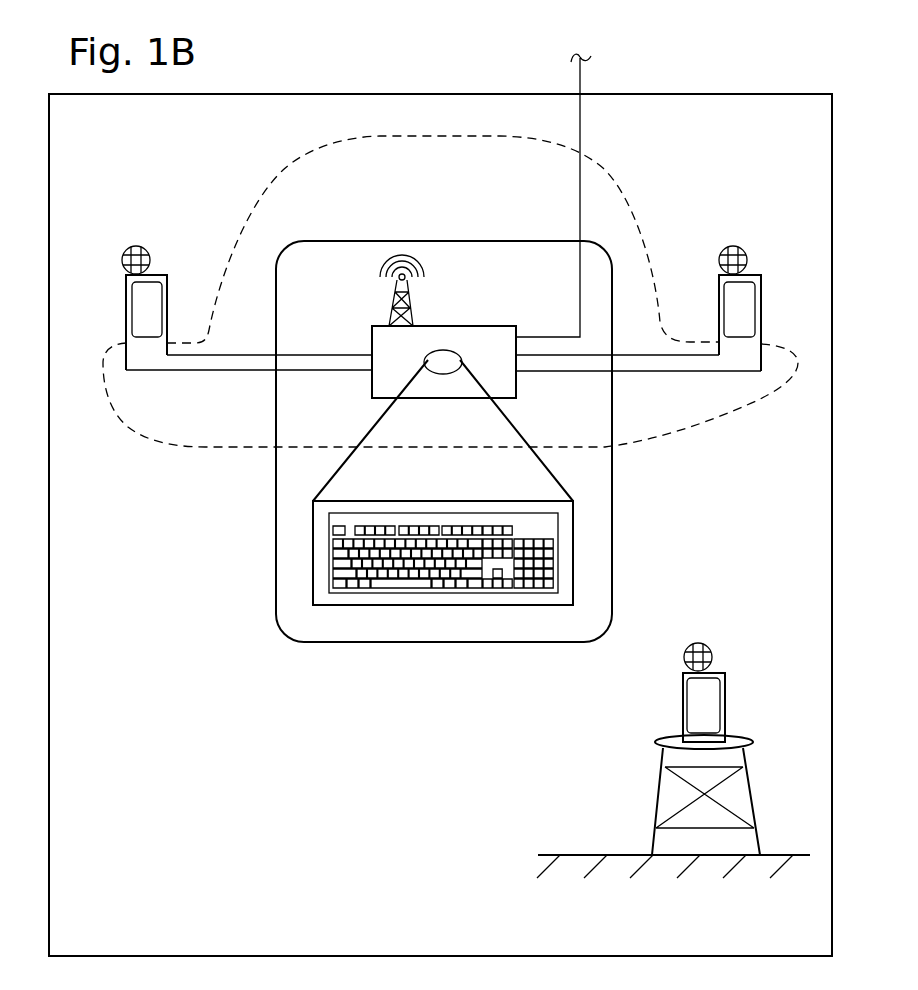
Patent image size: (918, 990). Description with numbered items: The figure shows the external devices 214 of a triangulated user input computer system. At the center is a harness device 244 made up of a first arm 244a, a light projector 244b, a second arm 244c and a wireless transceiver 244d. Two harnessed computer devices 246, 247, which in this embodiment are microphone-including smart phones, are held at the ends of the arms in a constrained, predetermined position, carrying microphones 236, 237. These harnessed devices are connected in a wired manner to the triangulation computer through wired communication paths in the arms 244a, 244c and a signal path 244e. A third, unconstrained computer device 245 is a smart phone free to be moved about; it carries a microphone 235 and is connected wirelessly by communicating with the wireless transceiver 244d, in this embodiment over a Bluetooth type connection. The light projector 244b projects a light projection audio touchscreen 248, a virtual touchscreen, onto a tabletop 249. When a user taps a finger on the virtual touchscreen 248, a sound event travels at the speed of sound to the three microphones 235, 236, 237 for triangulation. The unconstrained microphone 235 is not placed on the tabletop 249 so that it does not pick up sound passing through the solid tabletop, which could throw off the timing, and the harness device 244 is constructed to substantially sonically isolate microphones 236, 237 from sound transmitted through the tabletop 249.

The external devices 214 is at (440, 525).
The harness device 244 is at (603, 168).
The first arm 244a is at (252, 370).
The light projector 244b is at (453, 326).
The second arm 244c is at (622, 371).
The wireless transceiver 244d is at (392, 313).
The signal path 244e is at (582, 73).
The light projection audio touchscreen 248 is at (573, 513).
The tabletop 249 is at (372, 593).
The harnessed computer device 246 is at (126, 303).
The microphone 236 is at (152, 253).
The harnessed computer device 247 is at (761, 290).
The microphone 237 is at (718, 262).
The unconstrained computer device 245 is at (725, 687).
The microphone 235 is at (683, 660).